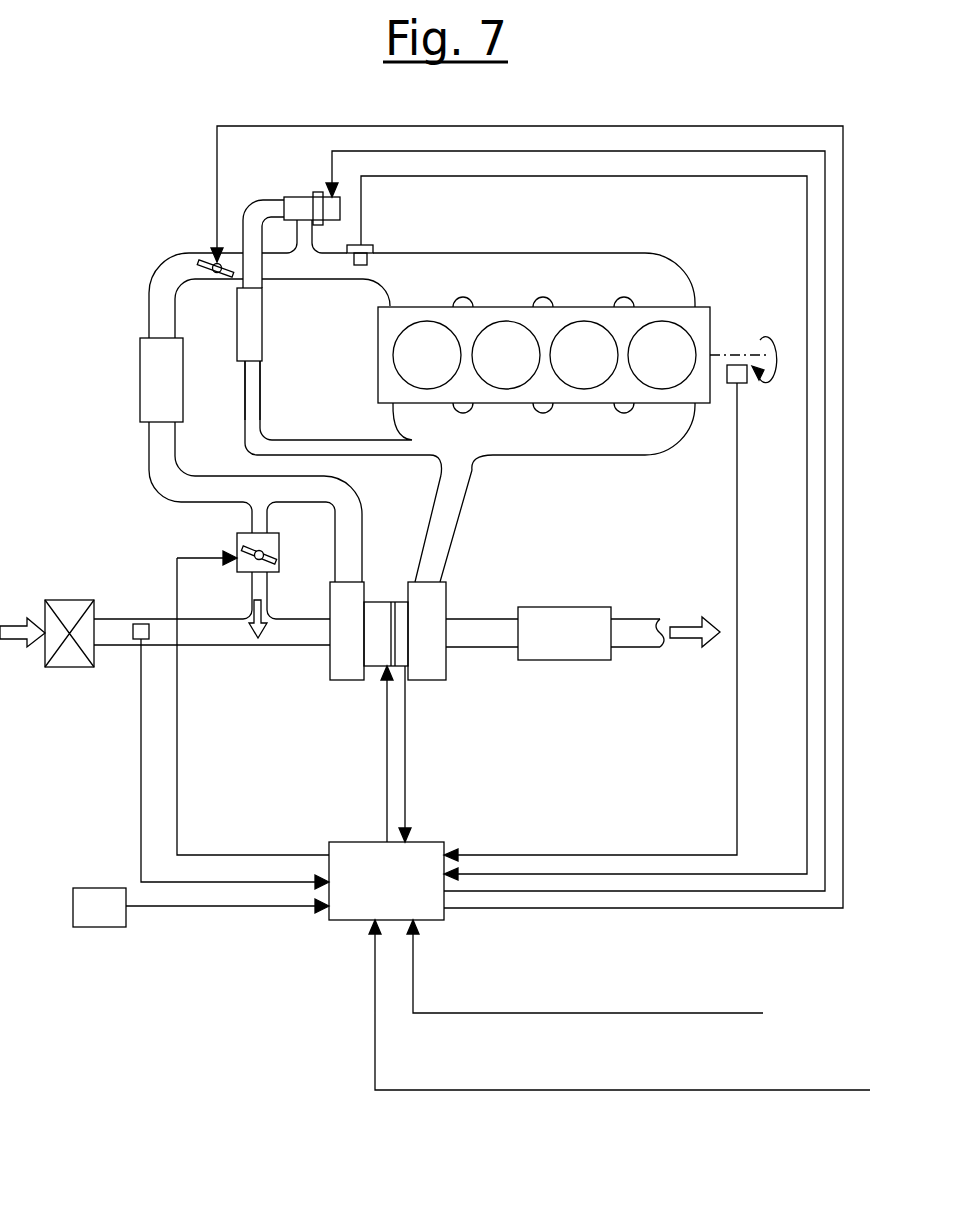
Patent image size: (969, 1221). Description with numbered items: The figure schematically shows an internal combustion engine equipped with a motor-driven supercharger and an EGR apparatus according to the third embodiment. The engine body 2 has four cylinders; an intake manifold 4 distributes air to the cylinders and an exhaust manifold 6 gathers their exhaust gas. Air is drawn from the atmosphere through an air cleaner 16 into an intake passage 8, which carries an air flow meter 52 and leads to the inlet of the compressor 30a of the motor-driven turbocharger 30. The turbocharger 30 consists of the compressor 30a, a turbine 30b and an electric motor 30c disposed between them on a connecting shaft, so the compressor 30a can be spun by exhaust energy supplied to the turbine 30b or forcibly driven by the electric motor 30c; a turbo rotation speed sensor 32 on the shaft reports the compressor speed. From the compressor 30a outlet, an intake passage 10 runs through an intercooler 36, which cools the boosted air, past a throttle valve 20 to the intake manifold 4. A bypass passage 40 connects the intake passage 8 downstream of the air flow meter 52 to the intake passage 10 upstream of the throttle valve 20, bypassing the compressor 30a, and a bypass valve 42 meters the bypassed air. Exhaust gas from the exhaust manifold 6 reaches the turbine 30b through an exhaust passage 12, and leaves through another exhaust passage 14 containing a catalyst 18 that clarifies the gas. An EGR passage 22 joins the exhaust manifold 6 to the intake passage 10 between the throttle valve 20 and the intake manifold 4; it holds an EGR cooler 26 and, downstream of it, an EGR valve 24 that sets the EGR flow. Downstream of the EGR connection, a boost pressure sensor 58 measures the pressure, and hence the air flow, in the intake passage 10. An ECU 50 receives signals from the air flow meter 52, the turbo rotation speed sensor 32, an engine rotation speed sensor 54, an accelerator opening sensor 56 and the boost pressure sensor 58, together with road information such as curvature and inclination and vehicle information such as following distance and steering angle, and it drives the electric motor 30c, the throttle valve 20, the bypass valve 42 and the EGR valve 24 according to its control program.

The engine body 2 is at (663, 302).
The intake manifold 4 is at (512, 252).
The exhaust manifold 6 is at (625, 457).
The intake passage 8 is at (207, 648).
The intake passage 10 is at (208, 474).
The exhaust passage 12 is at (468, 510).
The exhaust passage 14 is at (488, 648).
The air cleaner 16 is at (76, 600).
The catalyst 18 is at (573, 607).
The throttle valve 20 is at (208, 255).
The EGR passage 22 is at (260, 397).
The EGR valve 24 is at (300, 195).
The EGR cooler 26 is at (263, 335).
The motor-driven turbocharger 30 is at (391, 675).
The compressor 30a is at (328, 660).
The turbine 30b is at (447, 602).
The electric motor 30c is at (377, 667).
The turbo rotation speed sensor 32 is at (400, 600).
The intercooler 36 is at (140, 380).
The bypass passage 40 is at (267, 598).
The bypass valve 42 is at (237, 543).
The ECU 50 is at (428, 842).
The air flow meter 52 is at (142, 623).
The engine rotation speed sensor 54 is at (745, 387).
The accelerator opening sensor 56 is at (97, 887).
The boost pressure sensor 58 is at (367, 247).